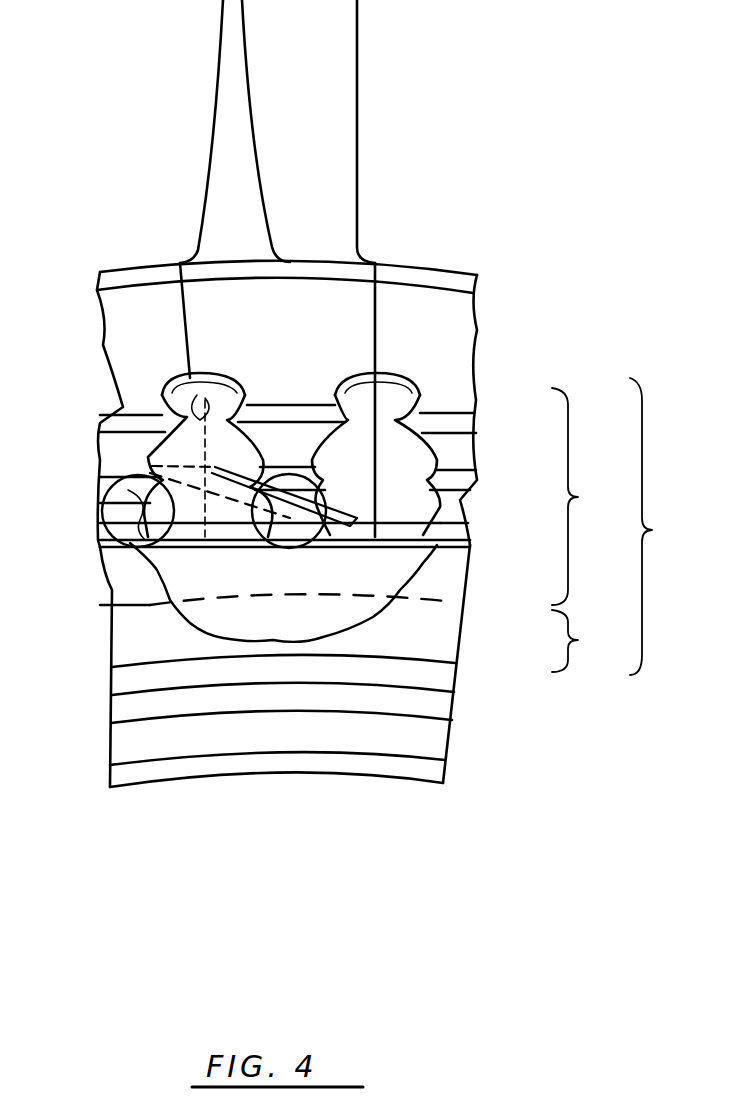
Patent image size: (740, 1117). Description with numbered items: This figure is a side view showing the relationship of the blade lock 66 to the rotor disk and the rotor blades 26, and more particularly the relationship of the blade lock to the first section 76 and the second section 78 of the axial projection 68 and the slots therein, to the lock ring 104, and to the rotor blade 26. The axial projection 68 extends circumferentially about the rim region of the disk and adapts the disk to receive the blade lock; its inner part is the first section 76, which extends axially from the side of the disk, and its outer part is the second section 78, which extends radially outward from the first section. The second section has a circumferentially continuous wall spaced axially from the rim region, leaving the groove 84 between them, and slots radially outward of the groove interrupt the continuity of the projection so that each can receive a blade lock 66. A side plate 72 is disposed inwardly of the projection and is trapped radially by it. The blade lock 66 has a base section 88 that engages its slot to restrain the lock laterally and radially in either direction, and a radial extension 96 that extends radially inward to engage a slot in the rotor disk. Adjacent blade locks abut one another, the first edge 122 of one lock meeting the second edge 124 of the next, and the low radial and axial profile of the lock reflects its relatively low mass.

The rotor blade 26 is at (353, 319).
The blade lock 66 is at (310, 449).
The second edge 124 is at (168, 415).
The first edge 122 is at (200, 400).
The base section 88 is at (107, 478).
The radial extension 96 is at (100, 523).
The lock ring 104 is at (287, 532).
The groove 84 is at (440, 603).
The side plate 72 is at (377, 749).
The second section 78 is at (584, 496).
The first section 76 is at (584, 641).
The axial projection 68 is at (660, 526).